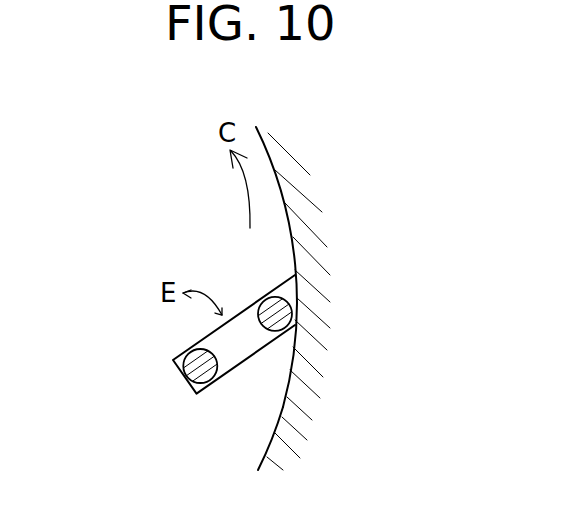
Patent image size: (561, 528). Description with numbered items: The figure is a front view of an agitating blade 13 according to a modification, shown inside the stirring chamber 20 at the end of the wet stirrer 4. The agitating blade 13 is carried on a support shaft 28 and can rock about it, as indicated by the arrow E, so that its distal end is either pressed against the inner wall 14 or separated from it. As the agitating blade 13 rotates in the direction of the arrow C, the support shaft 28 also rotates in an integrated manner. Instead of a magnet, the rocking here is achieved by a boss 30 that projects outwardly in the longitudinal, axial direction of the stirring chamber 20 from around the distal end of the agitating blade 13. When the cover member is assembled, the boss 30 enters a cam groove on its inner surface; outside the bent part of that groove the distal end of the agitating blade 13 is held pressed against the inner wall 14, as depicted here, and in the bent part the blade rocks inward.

The wet stirrer 4 is at (287, 160).
The agitating blade 13 is at (242, 347).
The inner wall 14 is at (284, 402).
The stirring chamber 20 is at (137, 242).
The support shaft 28 is at (188, 373).
The boss 30 is at (273, 318).